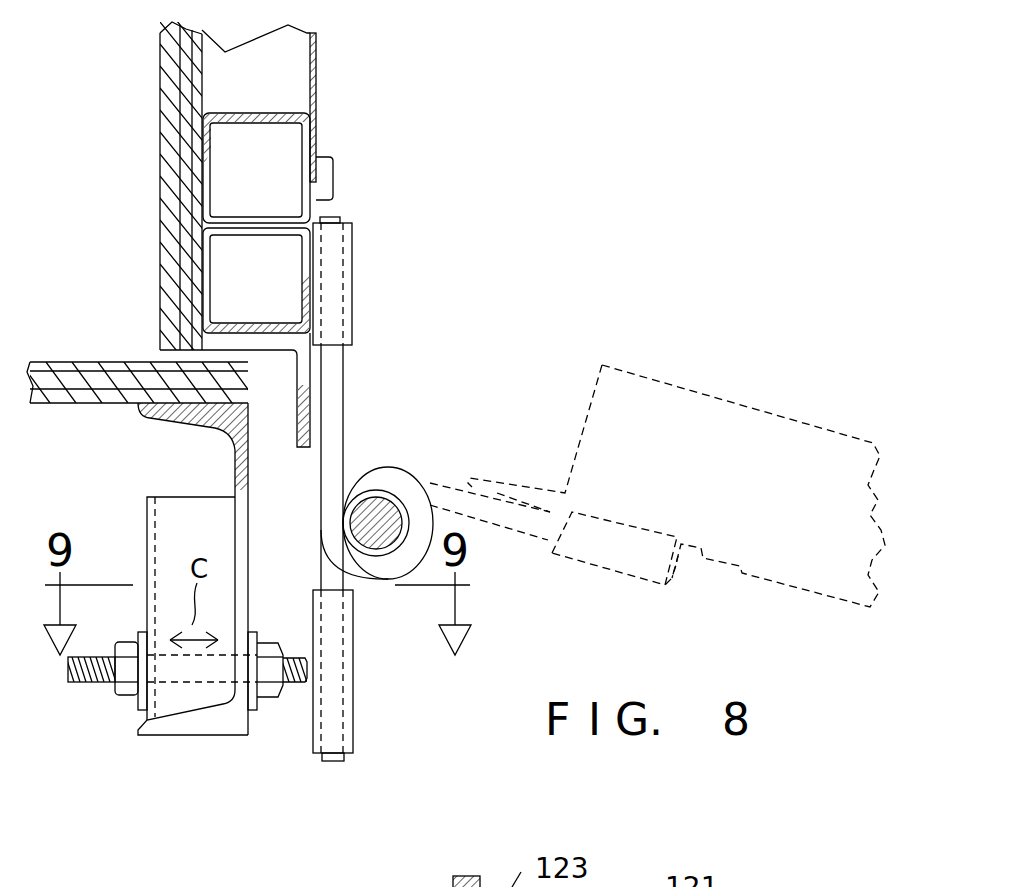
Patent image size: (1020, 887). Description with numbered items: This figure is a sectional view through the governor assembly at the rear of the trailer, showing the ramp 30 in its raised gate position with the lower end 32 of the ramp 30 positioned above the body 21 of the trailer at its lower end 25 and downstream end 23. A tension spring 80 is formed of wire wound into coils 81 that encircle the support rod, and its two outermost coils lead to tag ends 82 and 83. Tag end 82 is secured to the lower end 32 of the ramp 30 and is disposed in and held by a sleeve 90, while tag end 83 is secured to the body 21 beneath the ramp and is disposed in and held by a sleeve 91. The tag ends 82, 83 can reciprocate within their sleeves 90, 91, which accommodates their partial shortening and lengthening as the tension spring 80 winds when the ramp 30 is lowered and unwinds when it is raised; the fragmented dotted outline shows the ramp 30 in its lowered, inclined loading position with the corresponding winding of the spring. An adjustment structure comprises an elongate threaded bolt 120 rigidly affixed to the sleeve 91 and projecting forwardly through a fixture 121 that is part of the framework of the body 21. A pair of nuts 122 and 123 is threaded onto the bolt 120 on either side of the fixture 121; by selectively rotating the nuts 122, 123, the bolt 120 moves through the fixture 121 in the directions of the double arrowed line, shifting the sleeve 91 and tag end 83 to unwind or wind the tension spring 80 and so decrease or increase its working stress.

The ramp 30 is at (316, 122).
The tag end 82 is at (340, 223).
The sleeve 90 is at (352, 262).
The lower end 32 is at (352, 290).
The tension spring 80 is at (395, 467).
The coils 81 is at (382, 574).
The sleeve 91 is at (355, 700).
The tag end 83 is at (340, 762).
The downstream end 23 is at (240, 472).
The lower end 25 is at (250, 738).
The fixture 121 is at (157, 510).
The threaded bolt 120 is at (102, 693).
The nut 122 is at (128, 647).
The nut 123 is at (260, 642).
The body 21 is at (175, 735).